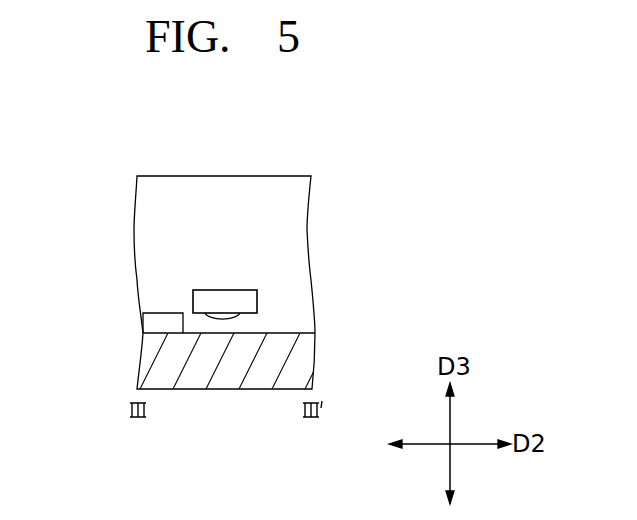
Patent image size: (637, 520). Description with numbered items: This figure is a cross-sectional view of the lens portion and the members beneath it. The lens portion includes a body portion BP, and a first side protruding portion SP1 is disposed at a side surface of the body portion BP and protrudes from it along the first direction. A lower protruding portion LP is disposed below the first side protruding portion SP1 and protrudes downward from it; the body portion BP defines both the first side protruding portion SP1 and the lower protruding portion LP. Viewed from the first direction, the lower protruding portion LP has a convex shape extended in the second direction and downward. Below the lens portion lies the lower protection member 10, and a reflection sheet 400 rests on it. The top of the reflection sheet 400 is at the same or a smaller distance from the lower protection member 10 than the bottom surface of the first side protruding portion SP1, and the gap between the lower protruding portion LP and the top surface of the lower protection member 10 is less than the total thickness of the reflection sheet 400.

The body portion BP is at (287, 231).
The lower protection member 10 is at (303, 362).
The reflection sheet 400 is at (152, 324).
The first side protruding portion SP1 is at (248, 303).
The lower protruding portion LP is at (224, 316).